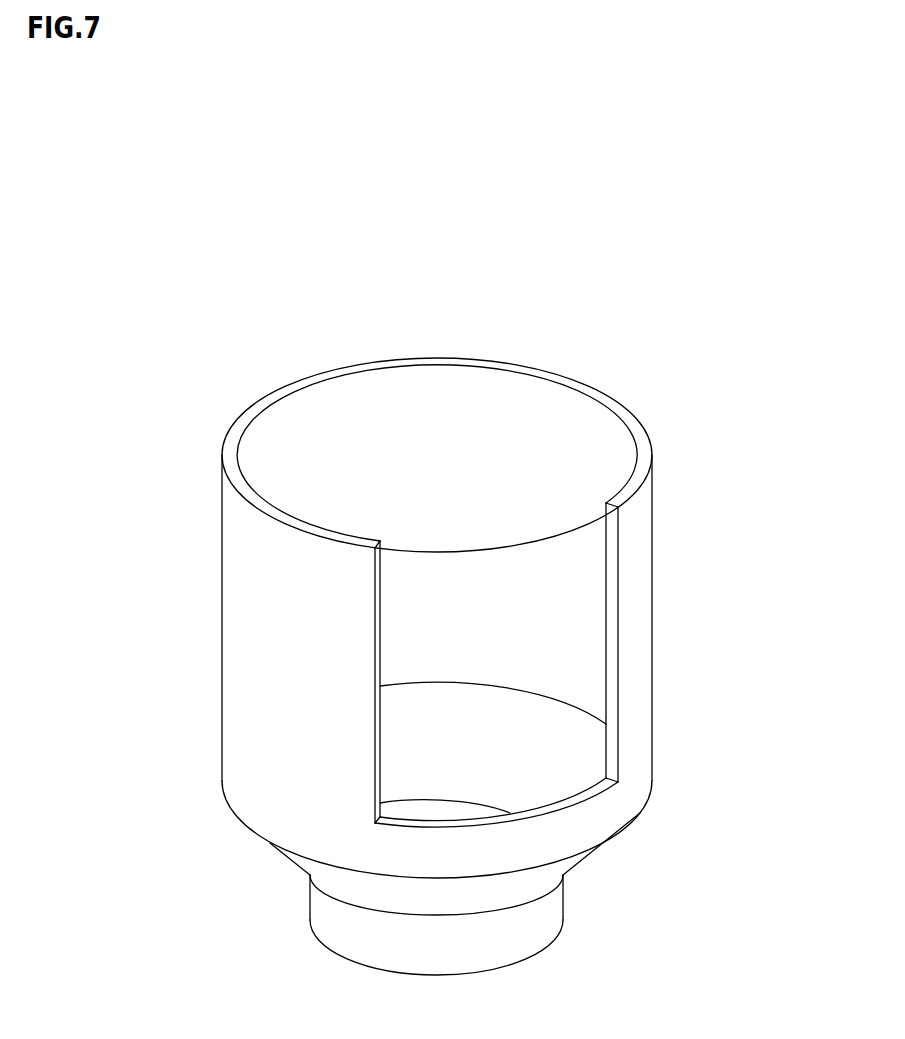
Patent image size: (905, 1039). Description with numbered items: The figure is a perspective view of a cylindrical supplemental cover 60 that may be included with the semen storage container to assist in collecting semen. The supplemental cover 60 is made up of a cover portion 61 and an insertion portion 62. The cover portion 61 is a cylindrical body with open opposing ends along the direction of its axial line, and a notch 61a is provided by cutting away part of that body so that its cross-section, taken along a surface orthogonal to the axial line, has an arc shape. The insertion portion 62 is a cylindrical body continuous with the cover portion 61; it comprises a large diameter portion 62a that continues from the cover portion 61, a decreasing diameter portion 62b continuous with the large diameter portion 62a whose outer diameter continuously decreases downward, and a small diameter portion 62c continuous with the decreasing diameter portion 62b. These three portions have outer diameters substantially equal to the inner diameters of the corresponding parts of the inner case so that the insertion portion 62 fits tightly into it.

The supplemental cover 60 is at (700, 394).
The cover portion 61 is at (737, 472).
The notch 61a is at (522, 618).
The insertion portion 62 is at (737, 825).
The large diameter portion 62a is at (617, 808).
The decreasing diameter portion 62b is at (578, 867).
The small diameter portion 62c is at (565, 897).